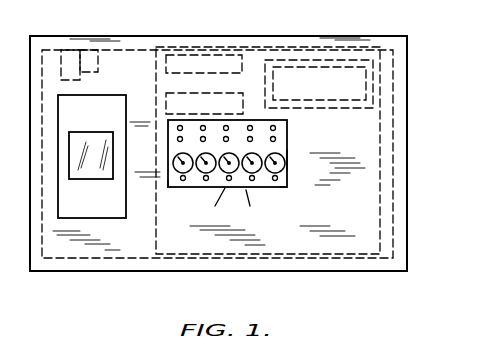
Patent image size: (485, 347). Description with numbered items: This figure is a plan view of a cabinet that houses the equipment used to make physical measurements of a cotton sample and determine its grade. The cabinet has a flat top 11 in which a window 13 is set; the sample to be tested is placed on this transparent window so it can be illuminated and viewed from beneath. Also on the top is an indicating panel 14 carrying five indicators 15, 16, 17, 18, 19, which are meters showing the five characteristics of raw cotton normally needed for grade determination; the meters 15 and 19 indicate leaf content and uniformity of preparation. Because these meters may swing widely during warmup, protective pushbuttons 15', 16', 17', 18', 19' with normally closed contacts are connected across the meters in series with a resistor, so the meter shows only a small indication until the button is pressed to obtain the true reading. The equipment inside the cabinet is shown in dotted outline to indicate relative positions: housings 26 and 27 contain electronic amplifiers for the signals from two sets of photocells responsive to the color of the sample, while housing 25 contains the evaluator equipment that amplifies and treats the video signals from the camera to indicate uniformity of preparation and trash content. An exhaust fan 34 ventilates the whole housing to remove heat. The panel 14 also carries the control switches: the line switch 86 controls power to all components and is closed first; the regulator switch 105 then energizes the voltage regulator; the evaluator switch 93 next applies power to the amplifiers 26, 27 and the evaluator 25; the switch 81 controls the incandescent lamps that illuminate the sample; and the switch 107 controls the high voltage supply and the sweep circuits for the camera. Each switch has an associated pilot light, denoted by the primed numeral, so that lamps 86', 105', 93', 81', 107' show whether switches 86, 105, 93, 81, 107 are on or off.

The flat top 11 is at (400, 206).
The window 13 is at (82, 182).
The indicating panel 14 is at (287, 175).
The indicator 15 is at (208, 153).
The protective pushbutton 15' is at (168, 197).
The indicator 16 is at (192, 196).
The protective pushbutton 16' is at (216, 192).
The indicator 17 is at (237, 196).
The protective pushbutton 17' is at (214, 206).
The indicator 18 is at (266, 196).
The protective pushbutton 18' is at (254, 207).
The indicator 19 is at (304, 163).
The protective pushbutton 19' is at (292, 197).
The evaluator housing 25 is at (313, 62).
The amplifier housing 26 is at (186, 57).
The amplifier housing 27 is at (240, 92).
The exhaust fan 34 is at (76, 48).
The switch 81 is at (297, 147).
The indicating lamp 81' is at (297, 122).
The line switch 86 is at (156, 147).
The indicating lamp 86' is at (156, 117).
The evaluator switch 93 is at (262, 149).
The indicating lamp 93' is at (260, 114).
The regulator switch 105 is at (195, 149).
The indicating lamp 105' is at (189, 114).
The switch 107 is at (226, 149).
The indicating lamp 107' is at (216, 114).